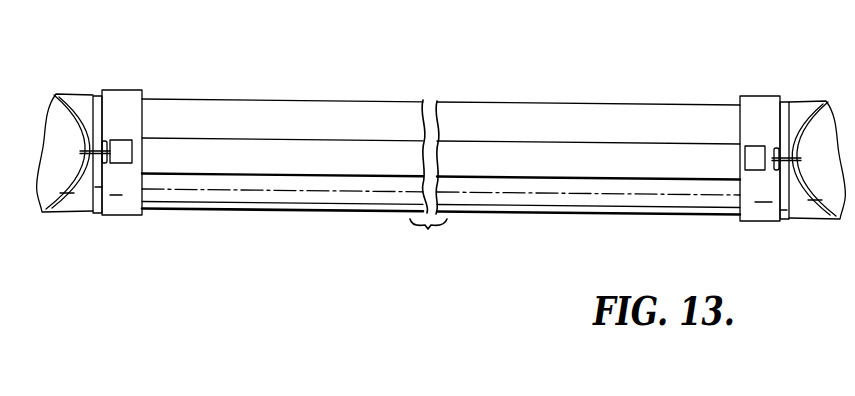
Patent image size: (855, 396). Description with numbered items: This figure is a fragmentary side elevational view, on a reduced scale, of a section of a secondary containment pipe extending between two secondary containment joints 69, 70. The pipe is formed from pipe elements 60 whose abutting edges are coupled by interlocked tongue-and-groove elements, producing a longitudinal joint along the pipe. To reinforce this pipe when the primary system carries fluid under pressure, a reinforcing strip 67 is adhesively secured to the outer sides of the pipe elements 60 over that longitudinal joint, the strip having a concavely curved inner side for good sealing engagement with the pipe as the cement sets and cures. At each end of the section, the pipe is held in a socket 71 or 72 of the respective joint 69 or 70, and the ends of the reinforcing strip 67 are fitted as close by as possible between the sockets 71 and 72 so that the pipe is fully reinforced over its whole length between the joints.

The pipe element 60 is at (615, 112).
The reinforcing strip 67 is at (517, 160).
The secondary containment joint 69 is at (77, 72).
The secondary containment joint 70 is at (788, 82).
The socket 71 is at (119, 106).
The socket 72 is at (762, 110).